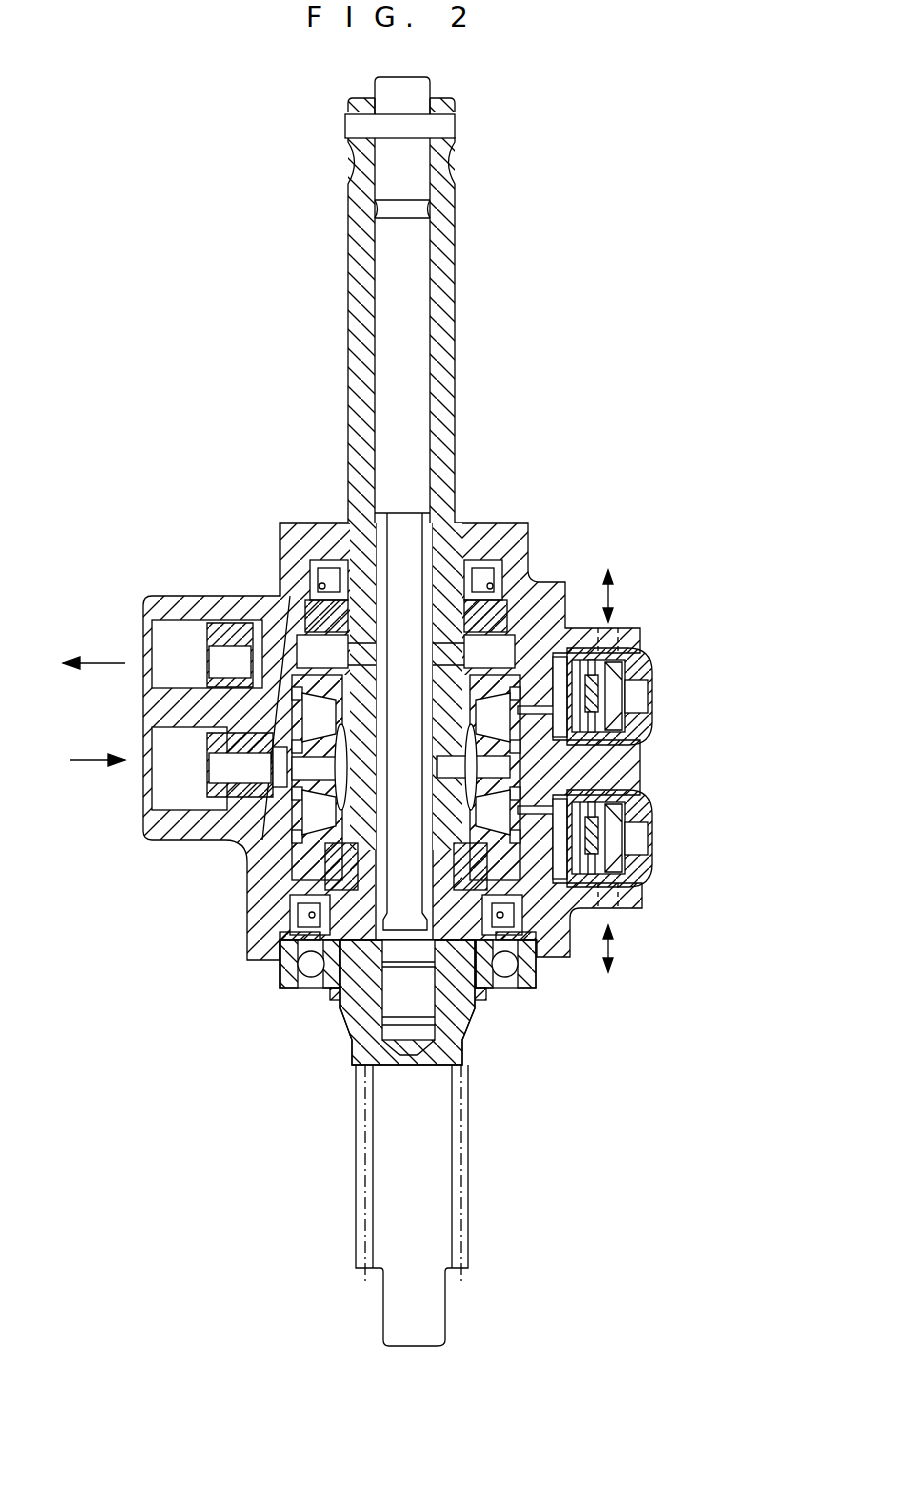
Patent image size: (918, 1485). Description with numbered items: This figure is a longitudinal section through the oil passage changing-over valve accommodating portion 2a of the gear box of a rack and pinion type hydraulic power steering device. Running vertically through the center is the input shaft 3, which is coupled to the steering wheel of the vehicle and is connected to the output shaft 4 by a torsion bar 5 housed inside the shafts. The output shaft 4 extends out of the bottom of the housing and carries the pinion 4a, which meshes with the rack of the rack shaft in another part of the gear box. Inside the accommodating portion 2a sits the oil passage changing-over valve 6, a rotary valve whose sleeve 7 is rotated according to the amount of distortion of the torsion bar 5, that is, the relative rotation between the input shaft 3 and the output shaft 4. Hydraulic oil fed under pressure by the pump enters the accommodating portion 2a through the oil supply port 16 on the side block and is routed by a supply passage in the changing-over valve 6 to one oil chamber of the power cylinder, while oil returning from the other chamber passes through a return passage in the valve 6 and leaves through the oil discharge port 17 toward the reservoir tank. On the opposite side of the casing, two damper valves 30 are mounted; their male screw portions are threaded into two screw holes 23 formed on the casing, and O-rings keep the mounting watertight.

The oil passage changing-over valve accommodating portion 2a is at (287, 597).
The input shaft 3 is at (348, 272).
The output shaft 4 is at (400, 1183).
The pinion 4a is at (470, 1167).
The torsion bar 5 is at (418, 327).
The oil passage changing-over valve 6 is at (502, 672).
The sleeve 7 is at (310, 872).
The oil supply port 16 is at (163, 651).
The oil discharge port 17 is at (165, 787).
The screw hole 23 is at (640, 787).
The damper valve 30 is at (652, 692).